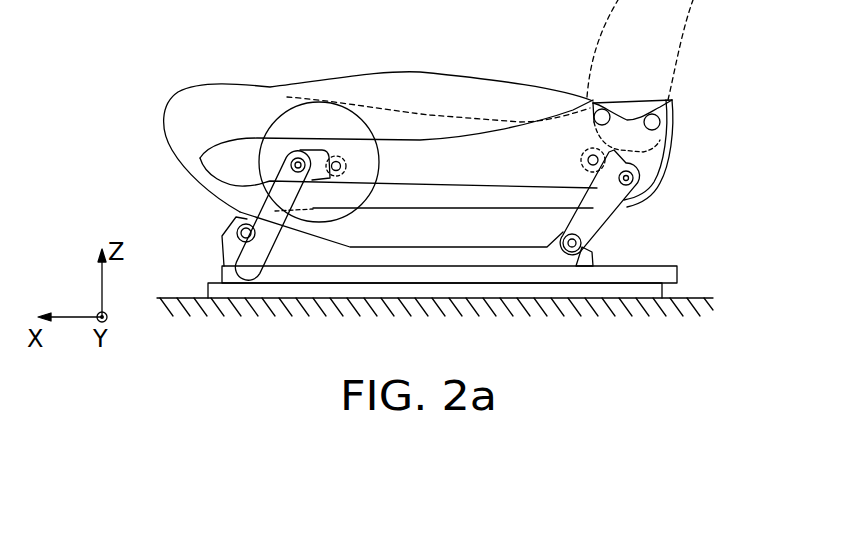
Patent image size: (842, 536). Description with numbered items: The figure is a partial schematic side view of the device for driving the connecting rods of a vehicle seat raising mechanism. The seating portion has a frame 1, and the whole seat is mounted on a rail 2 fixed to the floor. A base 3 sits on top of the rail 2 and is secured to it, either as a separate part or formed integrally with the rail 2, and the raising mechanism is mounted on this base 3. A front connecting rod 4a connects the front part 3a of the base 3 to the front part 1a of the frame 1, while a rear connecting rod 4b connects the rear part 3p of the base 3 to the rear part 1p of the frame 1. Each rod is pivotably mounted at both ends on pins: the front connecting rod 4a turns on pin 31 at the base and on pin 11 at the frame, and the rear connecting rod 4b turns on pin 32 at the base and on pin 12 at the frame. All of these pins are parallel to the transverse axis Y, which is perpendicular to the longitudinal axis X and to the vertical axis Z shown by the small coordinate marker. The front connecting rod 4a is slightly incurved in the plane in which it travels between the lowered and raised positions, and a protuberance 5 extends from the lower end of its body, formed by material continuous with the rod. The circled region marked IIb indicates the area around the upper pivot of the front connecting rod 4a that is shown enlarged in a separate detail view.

The frame 1 is at (516, 260).
The front part of the frame 1a is at (227, 243).
The rear part of the frame 1p is at (590, 257).
The rail 2 is at (696, 262).
The base 3 is at (363, 133).
The front part of the base 3a is at (223, 168).
The rear part of the base 3p is at (645, 158).
The front connecting rod 4a is at (253, 197).
The rear connecting rod 4b is at (593, 220).
The protuberance 5 is at (253, 263).
The pin 11 is at (296, 158).
The pin 12 is at (633, 174).
The pin 31 is at (244, 242).
The pin 32 is at (575, 252).
The detail view IIb callout IIb is at (260, 122).